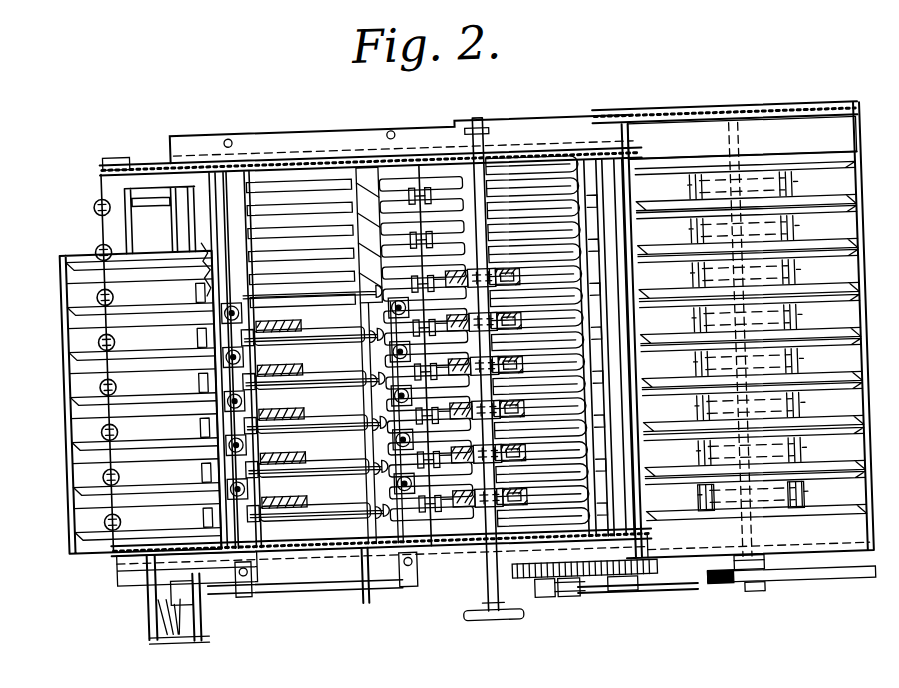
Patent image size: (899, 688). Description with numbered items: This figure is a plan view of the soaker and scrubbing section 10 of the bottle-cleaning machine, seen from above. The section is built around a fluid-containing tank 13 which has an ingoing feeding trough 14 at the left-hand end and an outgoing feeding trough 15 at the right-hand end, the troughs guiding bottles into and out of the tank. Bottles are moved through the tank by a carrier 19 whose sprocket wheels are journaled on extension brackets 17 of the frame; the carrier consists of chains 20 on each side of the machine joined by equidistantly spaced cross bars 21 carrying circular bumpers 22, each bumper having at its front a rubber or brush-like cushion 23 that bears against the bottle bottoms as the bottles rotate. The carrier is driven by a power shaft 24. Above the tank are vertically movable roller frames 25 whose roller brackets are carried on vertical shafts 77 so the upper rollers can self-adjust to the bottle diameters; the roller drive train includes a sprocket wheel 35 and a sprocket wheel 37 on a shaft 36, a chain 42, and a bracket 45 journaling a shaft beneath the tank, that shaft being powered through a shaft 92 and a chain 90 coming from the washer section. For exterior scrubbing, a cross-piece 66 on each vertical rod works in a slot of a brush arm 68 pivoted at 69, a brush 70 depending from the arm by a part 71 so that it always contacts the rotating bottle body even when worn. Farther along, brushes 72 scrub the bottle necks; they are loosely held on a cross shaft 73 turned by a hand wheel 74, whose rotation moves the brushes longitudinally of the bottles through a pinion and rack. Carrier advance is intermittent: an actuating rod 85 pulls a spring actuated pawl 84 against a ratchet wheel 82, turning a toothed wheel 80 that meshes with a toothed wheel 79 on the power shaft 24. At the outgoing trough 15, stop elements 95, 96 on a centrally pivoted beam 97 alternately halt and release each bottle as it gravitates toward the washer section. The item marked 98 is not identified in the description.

The soaker and scrubbing section 10 is at (367, 119).
The tank 13 is at (312, 223).
The ingoing feeding trough 14 is at (76, 373).
The outgoing feeding trough 15 is at (743, 331).
The extension brackets 17 is at (169, 151).
The carrier 19 is at (146, 163).
The chains 20 is at (418, 164).
The cross bars 21 is at (436, 222).
The bumpers 22 is at (426, 237).
The cushion 23 is at (451, 241).
The power shaft 24 is at (633, 553).
The roller frames 25 is at (217, 523).
The sprocket wheel 35 is at (358, 597).
The shaft 36 is at (300, 585).
The sprocket wheel 37 is at (197, 591).
The chain 42 is at (143, 610).
The bracket 45 is at (142, 574).
The cross-piece 66 is at (305, 497).
The brush arm 68 is at (315, 369).
The pivot 69 is at (311, 433).
The brush 70 is at (300, 346).
The part 71 is at (291, 411).
The brushes 72 is at (516, 286).
The cross shaft 73 is at (480, 593).
The hand wheel 74 is at (496, 621).
The vertical shafts 77 is at (232, 348).
The toothed wheel 79 is at (608, 579).
The toothed wheel 80 is at (537, 603).
The ratchet wheel 82 is at (607, 597).
The spring actuated pawl 84 is at (567, 602).
The actuating rod 85 is at (632, 601).
The chain 90 is at (827, 126).
The shaft 92 is at (627, 150).
The stop element 95 is at (695, 519).
The stop element 96 is at (803, 523).
The centrally pivoted beam 97 is at (754, 593).
The plate 98 is at (838, 591).